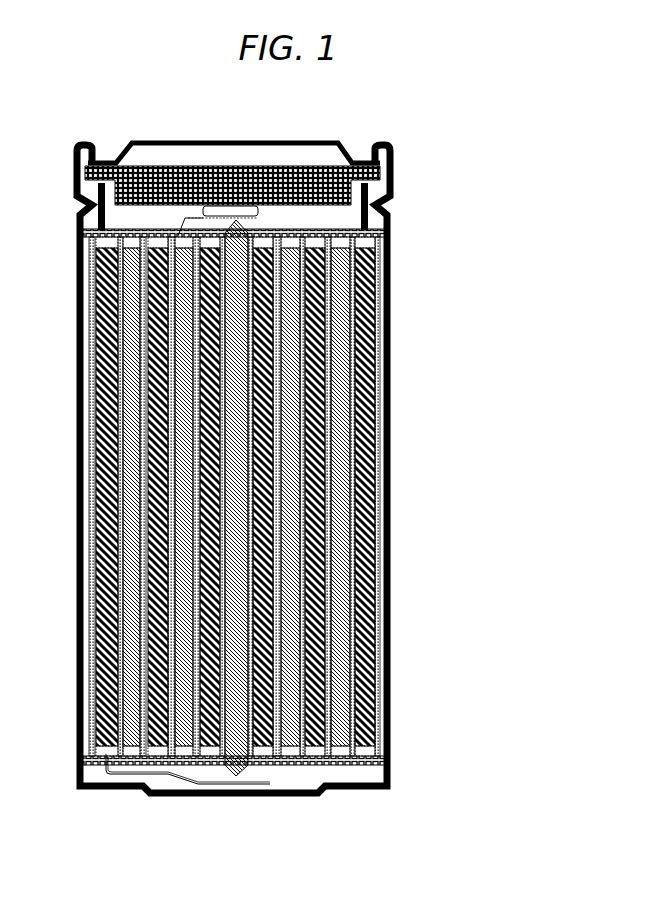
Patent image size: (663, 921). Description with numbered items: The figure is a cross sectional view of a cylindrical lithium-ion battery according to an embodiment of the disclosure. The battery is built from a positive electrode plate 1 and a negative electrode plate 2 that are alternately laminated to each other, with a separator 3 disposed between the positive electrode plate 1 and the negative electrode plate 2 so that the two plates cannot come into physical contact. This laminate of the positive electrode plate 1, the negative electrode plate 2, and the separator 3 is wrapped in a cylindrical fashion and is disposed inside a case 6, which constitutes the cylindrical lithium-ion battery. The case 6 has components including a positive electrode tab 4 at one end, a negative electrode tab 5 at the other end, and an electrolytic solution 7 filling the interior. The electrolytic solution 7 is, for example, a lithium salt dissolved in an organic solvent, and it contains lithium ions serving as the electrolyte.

The positive electrode plate 1 is at (380, 264).
The negative electrode plate 2 is at (383, 320).
The separator 3 is at (368, 436).
The positive electrode tab 4 is at (250, 208).
The negative electrode tab 5 is at (262, 776).
The case 6 is at (383, 530).
The electrolytic solution 7 is at (340, 668).